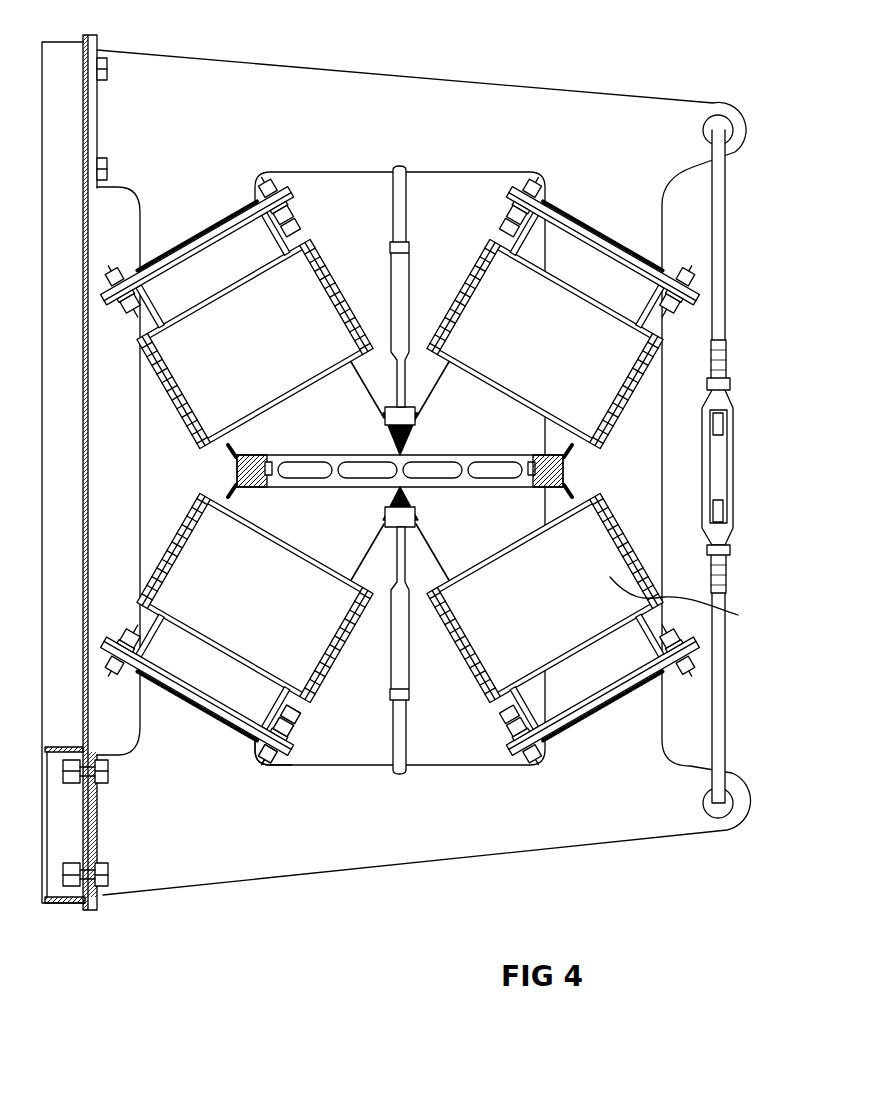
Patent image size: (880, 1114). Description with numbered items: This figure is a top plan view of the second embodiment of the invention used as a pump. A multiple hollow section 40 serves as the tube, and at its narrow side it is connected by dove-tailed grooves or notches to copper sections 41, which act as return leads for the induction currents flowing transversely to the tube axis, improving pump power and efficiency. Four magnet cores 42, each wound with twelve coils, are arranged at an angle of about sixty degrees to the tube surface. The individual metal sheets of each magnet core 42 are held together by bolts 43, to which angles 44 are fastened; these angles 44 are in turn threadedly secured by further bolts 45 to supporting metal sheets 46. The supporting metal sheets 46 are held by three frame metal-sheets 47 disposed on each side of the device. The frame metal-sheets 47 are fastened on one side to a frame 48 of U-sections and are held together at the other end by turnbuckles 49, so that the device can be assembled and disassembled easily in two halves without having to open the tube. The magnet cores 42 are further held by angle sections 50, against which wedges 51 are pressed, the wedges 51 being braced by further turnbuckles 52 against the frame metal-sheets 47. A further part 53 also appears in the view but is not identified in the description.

The multiple hollow section 40 is at (462, 480).
The copper sections 41 is at (565, 468).
The magnet cores 42 is at (550, 442).
The bolts 43 is at (295, 735).
The angles 44 is at (287, 752).
The further bolts 45 is at (272, 757).
The supporting metal sheets 46 is at (267, 763).
The frame metal-sheets 47 is at (223, 848).
The frame of U-sections 48 is at (68, 902).
The turnbuckles 49 is at (731, 492).
The angle sections 50 is at (416, 412).
The wedges 51 is at (407, 415).
The further turnbuckles 52 is at (397, 298).
The cable 53 is at (689, 603).